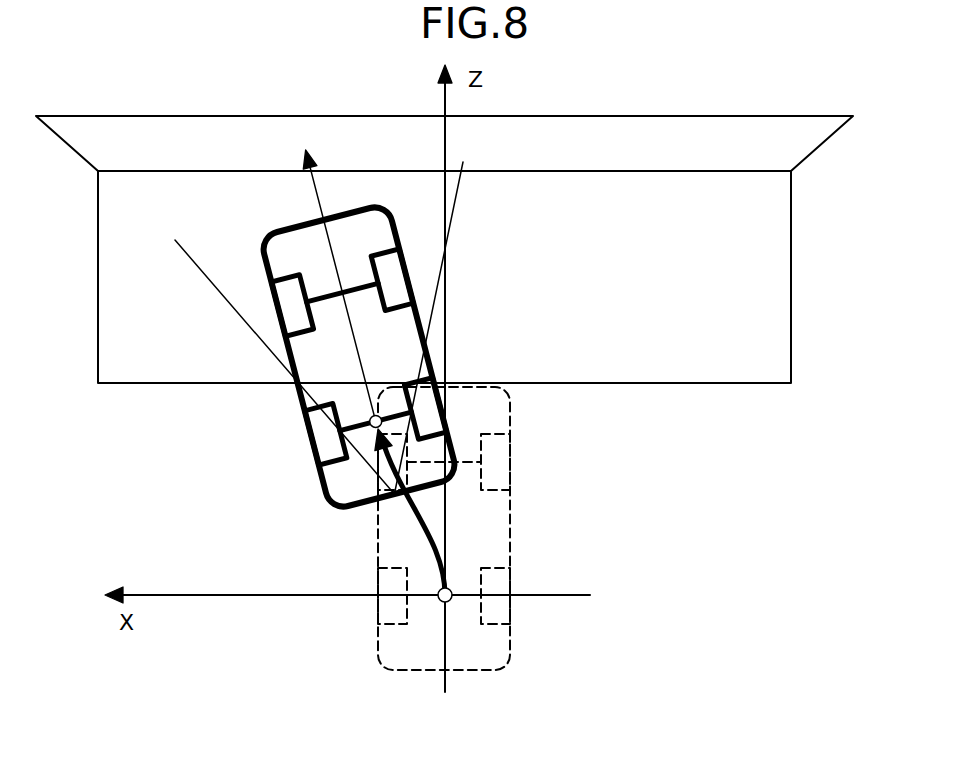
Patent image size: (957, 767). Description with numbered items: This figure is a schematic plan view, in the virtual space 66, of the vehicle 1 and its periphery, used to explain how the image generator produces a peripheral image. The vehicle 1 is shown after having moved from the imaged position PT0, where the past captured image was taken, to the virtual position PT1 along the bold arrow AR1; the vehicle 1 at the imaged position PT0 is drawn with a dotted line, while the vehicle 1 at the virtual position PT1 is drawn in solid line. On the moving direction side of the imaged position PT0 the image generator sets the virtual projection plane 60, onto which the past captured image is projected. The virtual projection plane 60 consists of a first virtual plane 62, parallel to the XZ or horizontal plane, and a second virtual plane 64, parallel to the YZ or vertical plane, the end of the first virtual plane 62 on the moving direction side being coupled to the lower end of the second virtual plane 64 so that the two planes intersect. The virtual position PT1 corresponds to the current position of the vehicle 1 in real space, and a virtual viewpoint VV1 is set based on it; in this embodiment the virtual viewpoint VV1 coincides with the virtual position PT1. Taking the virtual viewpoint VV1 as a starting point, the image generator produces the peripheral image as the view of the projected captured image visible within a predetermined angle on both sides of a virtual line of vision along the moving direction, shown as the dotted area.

The vehicle 1 is at (312, 448).
The virtual projection plane 60 is at (464, 249).
The first virtual plane 62 is at (842, 165).
The second virtual plane 64 is at (797, 168).
The virtual space 66 is at (649, 474).
The imaged position PT0 is at (449, 606).
The virtual position PT1 is at (330, 350).
The virtual viewpoint VV1 is at (372, 427).
The bold arrow AR1 is at (419, 528).